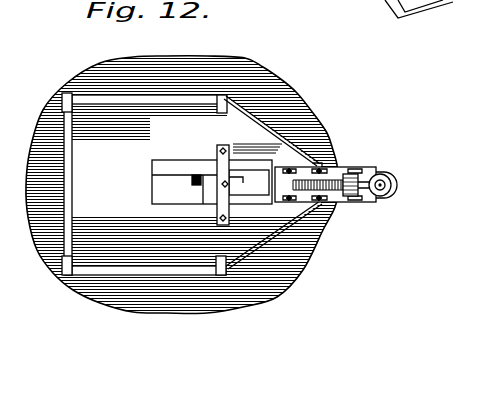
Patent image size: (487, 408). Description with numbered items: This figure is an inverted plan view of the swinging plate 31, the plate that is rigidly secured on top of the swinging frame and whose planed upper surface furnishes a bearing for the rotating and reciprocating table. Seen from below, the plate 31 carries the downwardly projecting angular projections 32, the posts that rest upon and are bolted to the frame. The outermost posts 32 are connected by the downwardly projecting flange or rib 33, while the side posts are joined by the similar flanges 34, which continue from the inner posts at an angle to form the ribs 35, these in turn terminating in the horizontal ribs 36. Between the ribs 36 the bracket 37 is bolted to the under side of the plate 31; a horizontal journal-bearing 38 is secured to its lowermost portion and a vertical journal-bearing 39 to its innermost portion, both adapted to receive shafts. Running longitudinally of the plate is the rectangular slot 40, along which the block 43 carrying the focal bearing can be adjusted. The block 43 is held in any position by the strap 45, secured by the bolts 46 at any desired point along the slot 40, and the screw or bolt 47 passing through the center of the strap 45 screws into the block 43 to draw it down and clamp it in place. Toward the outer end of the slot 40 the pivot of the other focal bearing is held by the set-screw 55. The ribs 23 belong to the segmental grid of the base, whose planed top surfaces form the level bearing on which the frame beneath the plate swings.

The plate 31 is at (273, 88).
The angular projections 32 is at (63, 96).
The downwardly-projecting flange or rib 33 is at (65, 170).
The flanges 34 is at (148, 104).
The ribs 35 is at (279, 137).
The horizontal ribs 36 is at (329, 164).
The bracket 37 is at (372, 170).
The horizontal journal-bearing 38 is at (352, 196).
The vertical journal-bearing 39 is at (393, 187).
The rectangular slot 40 is at (168, 182).
The block 43 is at (212, 183).
The strap 45 is at (230, 199).
The bolts 46 is at (220, 148).
The screw or bolt 47 is at (224, 187).
The set-screw 55 is at (193, 187).
The ribs 23 is at (440, 0).